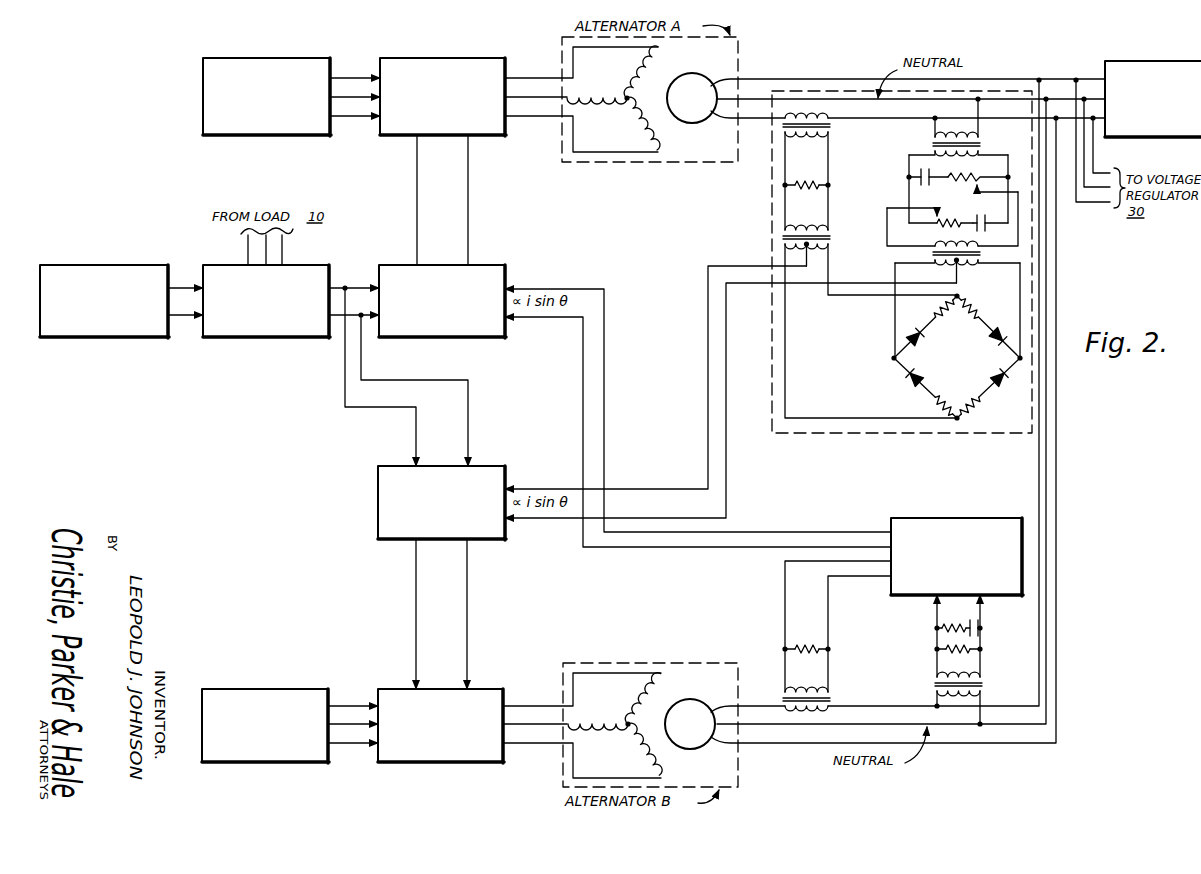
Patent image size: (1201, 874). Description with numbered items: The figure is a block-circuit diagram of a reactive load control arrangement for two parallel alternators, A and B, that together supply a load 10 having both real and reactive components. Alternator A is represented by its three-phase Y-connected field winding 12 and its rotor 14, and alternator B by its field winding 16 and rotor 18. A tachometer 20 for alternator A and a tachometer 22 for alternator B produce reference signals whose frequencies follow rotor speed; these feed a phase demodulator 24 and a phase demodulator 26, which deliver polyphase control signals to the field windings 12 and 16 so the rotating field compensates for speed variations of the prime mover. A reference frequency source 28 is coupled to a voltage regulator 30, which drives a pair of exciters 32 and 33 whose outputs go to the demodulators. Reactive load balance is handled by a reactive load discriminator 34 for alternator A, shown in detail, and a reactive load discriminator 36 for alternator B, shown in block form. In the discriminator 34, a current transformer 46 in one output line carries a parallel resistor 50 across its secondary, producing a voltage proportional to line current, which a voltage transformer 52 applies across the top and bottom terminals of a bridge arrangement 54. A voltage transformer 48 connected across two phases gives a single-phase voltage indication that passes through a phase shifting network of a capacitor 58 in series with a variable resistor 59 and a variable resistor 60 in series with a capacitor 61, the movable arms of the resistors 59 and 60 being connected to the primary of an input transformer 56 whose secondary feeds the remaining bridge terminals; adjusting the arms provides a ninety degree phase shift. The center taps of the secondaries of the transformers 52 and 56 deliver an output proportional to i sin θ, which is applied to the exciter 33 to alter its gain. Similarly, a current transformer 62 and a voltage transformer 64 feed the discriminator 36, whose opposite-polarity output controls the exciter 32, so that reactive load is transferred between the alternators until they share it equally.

The load 10 is at (1176, 58).
The polyphase field winding 12 is at (632, 125).
The rotor 14 is at (702, 107).
The polyphase field winding 16 is at (635, 751).
The rotor 18 is at (700, 733).
The tachometer 20 is at (306, 57).
The tachometer 22 is at (301, 688).
The phase demodulator 24 is at (461, 57).
The phase demodulator 26 is at (484, 689).
The reference frequency source 28 is at (124, 263).
The voltage regulator 30 is at (309, 265).
The exciter 32 is at (488, 265).
The exciter 33 is at (378, 507).
The reactive load discriminator 34 is at (772, 348).
The reactive load discriminator 36 is at (1008, 516).
The current transformer 46 is at (814, 146).
The voltage transformer 48 is at (935, 150).
The resistor 50 is at (818, 185).
The voltage transformer 52 is at (826, 246).
The bridge arrangement 54 is at (966, 366).
The input transformer 56 is at (921, 254).
The capacitor 58 is at (914, 175).
The resistor 59 is at (989, 170).
The resistor 60 is at (923, 226).
The capacitor 61 is at (980, 218).
The current transformer 62 is at (833, 698).
The voltage transformer 64 is at (987, 686).